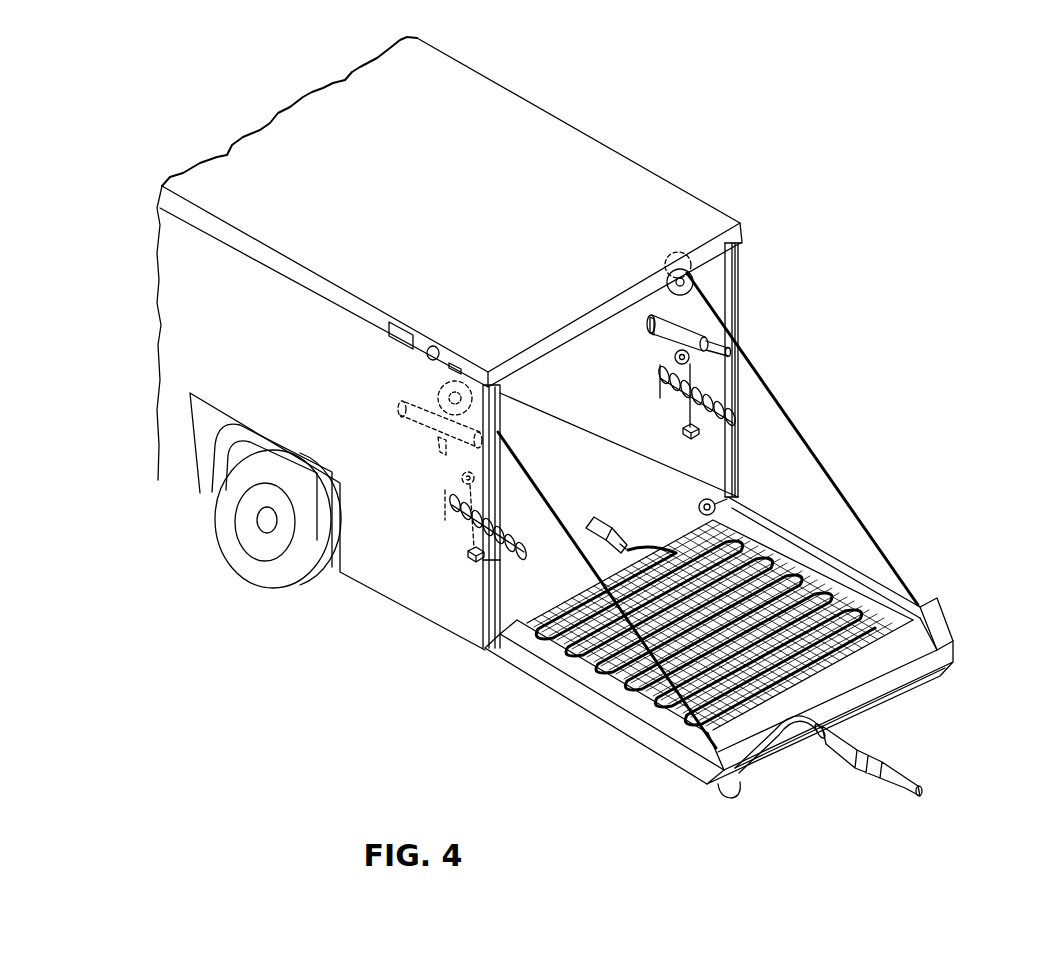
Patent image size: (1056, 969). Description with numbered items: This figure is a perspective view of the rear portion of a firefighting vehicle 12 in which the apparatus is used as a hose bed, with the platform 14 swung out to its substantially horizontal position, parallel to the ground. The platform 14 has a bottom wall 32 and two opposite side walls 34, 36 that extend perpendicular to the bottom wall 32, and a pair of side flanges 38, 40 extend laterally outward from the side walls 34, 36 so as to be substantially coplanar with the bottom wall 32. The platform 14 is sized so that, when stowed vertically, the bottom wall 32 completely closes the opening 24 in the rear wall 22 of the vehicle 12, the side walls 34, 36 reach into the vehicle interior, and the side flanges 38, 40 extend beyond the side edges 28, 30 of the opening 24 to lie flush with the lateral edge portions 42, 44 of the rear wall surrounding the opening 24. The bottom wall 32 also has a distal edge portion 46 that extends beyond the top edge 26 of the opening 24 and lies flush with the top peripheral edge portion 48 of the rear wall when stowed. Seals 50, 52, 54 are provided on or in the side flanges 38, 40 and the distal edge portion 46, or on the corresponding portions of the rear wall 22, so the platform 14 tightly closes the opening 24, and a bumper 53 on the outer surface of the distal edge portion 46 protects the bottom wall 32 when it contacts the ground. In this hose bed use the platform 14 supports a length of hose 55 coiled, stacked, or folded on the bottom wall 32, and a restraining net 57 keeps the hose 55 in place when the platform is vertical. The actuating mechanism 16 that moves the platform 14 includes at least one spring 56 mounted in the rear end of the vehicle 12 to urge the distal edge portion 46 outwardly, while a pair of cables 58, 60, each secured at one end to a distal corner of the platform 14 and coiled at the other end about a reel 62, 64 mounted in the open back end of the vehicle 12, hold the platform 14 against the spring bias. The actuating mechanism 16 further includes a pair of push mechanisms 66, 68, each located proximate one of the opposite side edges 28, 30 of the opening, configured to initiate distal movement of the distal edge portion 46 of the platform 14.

The firefighting vehicle 12 is at (880, 230).
The platform 14 is at (960, 655).
The actuating mechanism 16 is at (720, 380).
The rear wall 22 is at (744, 256).
The opening 24 is at (610, 487).
The top edge 26 is at (577, 320).
The side edge 28 is at (500, 568).
The side edge 30 is at (728, 287).
The bottom wall 32 is at (769, 771).
The side wall 34 is at (700, 762).
The side wall 36 is at (873, 590).
The side flange 38 is at (520, 678).
The side flange 40 is at (806, 540).
The lateral edge portion 42 is at (490, 614).
The lateral edge portion 44 is at (736, 313).
The distal edge portion 46 is at (858, 708).
The top peripheral edge portion 48 is at (745, 247).
The seal 50 is at (613, 718).
The seal 52 is at (837, 560).
The bumper 53 is at (722, 792).
The seal 54 is at (889, 678).
The hose 55 is at (568, 672).
The spring 56 is at (668, 390).
The net 57 is at (660, 735).
The cable 58 is at (560, 522).
The cable 60 is at (690, 434).
The reel 62 is at (450, 383).
The reel 64 is at (668, 258).
The push mechanism 66 is at (425, 460).
The push mechanism 68 is at (636, 339).